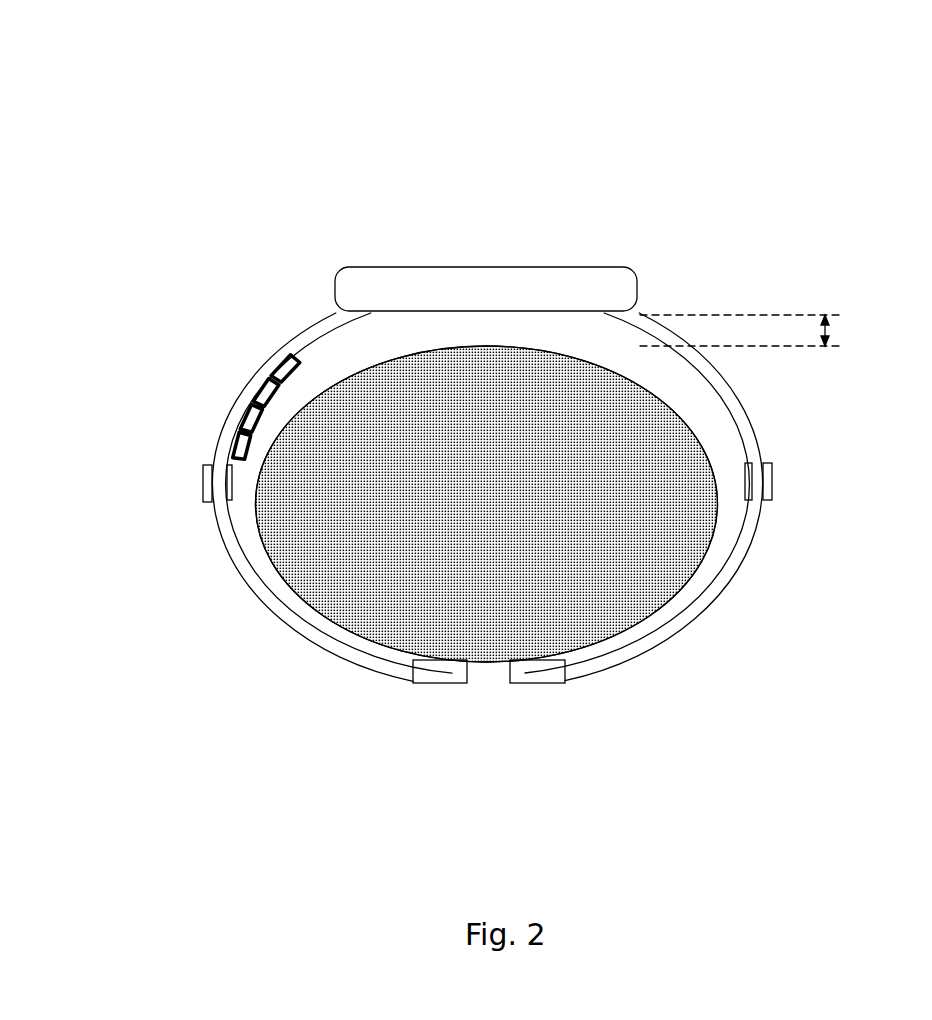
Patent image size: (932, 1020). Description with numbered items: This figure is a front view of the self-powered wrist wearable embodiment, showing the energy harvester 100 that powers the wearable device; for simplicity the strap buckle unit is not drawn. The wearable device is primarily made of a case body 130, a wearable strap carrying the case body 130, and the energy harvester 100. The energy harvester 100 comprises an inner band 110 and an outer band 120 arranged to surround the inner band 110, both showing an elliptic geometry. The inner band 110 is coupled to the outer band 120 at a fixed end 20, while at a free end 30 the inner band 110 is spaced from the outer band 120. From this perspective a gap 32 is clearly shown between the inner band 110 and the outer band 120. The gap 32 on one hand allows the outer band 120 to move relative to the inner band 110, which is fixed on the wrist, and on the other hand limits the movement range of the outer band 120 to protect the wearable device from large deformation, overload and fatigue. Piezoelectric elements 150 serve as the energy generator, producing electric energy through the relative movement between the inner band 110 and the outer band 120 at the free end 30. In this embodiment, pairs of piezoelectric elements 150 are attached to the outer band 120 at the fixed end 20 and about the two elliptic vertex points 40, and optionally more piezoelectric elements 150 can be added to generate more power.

The energy harvester 100 is at (790, 78).
The case body 130 is at (348, 287).
The outer band 120 is at (297, 338).
The inner band 110 is at (698, 447).
The free end 30 is at (519, 320).
The gap 32 is at (771, 329).
The elliptic vertex points 40 is at (196, 510).
The fixed end 20 is at (560, 692).
The piezoelectric elements 150 is at (200, 487).